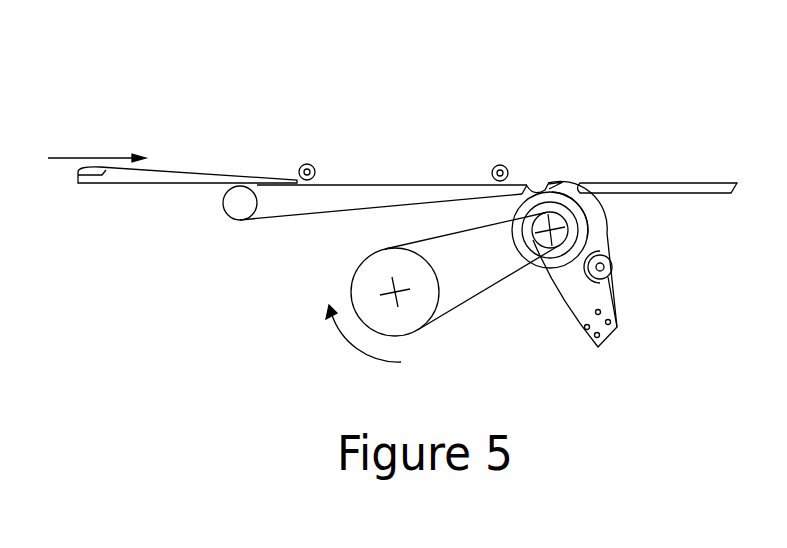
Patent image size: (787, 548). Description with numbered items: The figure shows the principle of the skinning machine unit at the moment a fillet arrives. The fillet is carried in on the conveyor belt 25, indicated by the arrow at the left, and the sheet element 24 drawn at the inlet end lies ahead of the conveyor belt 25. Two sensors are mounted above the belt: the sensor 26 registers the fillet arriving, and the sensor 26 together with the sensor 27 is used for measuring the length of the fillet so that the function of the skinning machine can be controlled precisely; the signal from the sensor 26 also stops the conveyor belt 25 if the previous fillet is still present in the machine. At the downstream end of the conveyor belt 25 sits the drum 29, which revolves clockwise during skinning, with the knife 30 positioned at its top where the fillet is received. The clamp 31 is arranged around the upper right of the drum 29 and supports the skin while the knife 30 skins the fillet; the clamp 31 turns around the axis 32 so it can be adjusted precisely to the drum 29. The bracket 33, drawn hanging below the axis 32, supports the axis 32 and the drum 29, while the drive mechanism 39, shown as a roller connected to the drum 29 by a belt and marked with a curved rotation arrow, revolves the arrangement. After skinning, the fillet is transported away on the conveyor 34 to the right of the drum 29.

The sheet / input media 24 is at (185, 163).
The conveyor belt 25 is at (393, 178).
The sensor 26 is at (313, 164).
The sensor 27 is at (506, 165).
The drum 29 is at (552, 253).
The knife 30 is at (567, 182).
The clamp 31 is at (602, 218).
The axis 32 is at (605, 268).
The bracket 33 is at (607, 330).
The conveyor 34 is at (672, 182).
The drive mechanism 39 is at (375, 304).